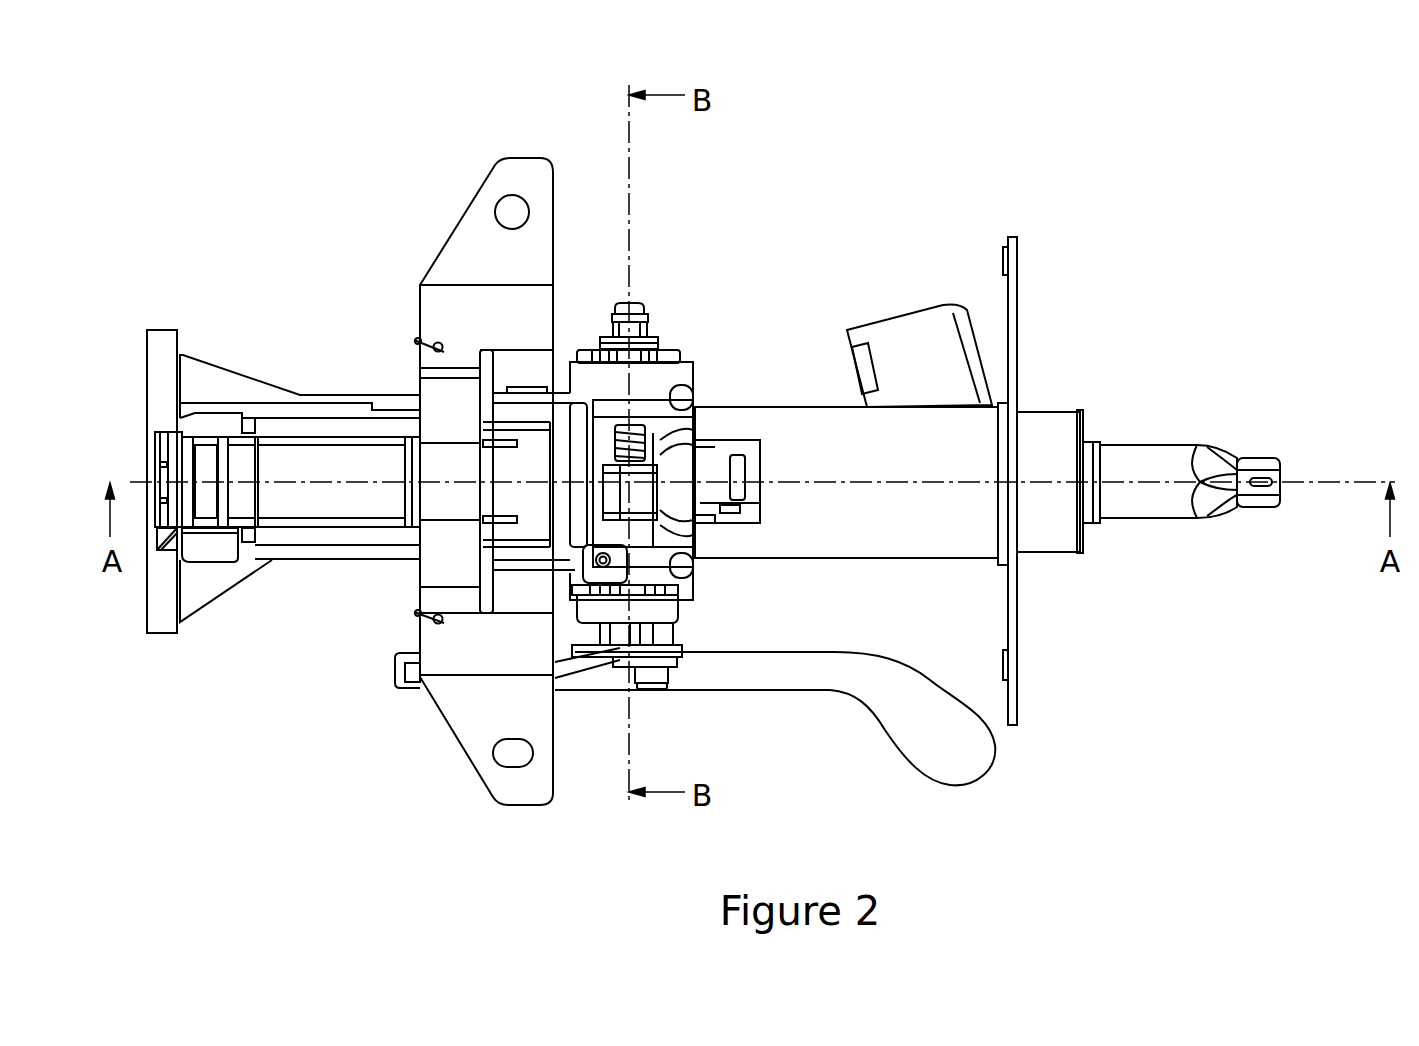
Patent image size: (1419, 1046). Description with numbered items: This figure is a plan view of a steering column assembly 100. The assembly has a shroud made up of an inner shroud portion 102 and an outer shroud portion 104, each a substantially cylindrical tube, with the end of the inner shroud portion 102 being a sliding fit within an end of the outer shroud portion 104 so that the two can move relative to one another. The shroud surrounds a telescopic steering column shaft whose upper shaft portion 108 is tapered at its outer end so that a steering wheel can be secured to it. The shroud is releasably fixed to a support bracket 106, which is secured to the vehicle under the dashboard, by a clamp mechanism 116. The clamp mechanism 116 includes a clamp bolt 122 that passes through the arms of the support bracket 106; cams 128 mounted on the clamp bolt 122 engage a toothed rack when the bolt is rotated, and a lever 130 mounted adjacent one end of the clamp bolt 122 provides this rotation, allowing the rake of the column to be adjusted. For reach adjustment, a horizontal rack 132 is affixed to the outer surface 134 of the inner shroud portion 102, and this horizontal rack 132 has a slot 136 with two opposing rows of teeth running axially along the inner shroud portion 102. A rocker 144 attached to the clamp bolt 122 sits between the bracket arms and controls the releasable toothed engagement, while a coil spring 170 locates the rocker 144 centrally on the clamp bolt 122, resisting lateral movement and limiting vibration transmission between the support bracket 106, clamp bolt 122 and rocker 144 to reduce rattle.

The steering column assembly 100 is at (1038, 130).
The inner shroud portion 102 is at (989, 451).
The outer shroud portion 104 is at (293, 381).
The support bracket 106 is at (457, 305).
The upper shaft portion 108 is at (1184, 442).
The clamp mechanism 116 is at (658, 303).
The clamp bolt 122 is at (656, 436).
The cams 128 is at (618, 610).
The lever 130 is at (958, 753).
The horizontal rack 132 is at (772, 481).
The outer surface 134 is at (974, 410).
The slot 136 is at (747, 504).
The rocker 144 is at (615, 513).
The coil spring 170 is at (645, 418).